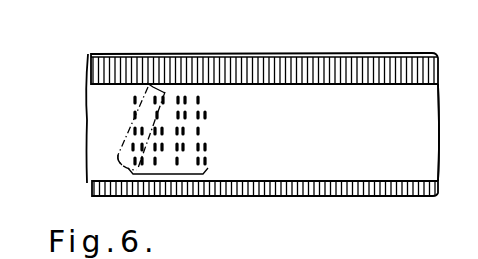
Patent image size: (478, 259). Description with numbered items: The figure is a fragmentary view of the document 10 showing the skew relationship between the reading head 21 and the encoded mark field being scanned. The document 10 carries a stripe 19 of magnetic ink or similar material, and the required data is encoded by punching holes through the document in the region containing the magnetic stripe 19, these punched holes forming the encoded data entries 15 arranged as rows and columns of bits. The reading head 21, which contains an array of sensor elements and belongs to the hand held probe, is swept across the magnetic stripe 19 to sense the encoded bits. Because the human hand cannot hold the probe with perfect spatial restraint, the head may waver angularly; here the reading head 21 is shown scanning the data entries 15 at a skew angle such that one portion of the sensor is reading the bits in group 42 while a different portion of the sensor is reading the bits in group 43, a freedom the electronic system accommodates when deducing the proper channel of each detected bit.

The document 10 is at (303, 50).
The magnetic stripe 19 is at (375, 93).
The encoded data entries 15 is at (164, 178).
The reading head 21 is at (127, 140).
The group of bits 42 is at (153, 87).
The group of bits 43 is at (123, 165).